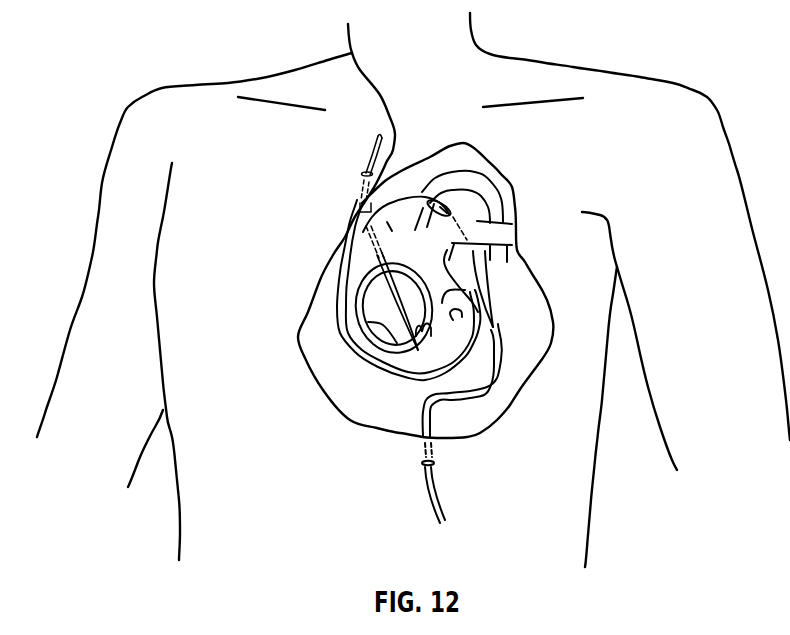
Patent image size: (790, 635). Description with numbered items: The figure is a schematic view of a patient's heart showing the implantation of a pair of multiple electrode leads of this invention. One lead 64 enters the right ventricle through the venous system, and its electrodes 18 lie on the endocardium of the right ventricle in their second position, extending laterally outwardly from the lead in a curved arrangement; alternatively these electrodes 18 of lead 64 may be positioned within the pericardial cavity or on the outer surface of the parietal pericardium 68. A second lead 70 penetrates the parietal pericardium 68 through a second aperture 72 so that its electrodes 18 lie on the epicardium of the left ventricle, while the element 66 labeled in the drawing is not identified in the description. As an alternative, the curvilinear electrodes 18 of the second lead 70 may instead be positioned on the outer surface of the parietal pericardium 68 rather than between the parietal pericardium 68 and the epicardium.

The electrodes 18 is at (368, 316).
The lead 64 is at (356, 235).
The catheter 66 is at (352, 53).
The parietal pericardium 68 is at (329, 260).
The second lead 70 is at (452, 400).
The second aperture 72 is at (493, 328).